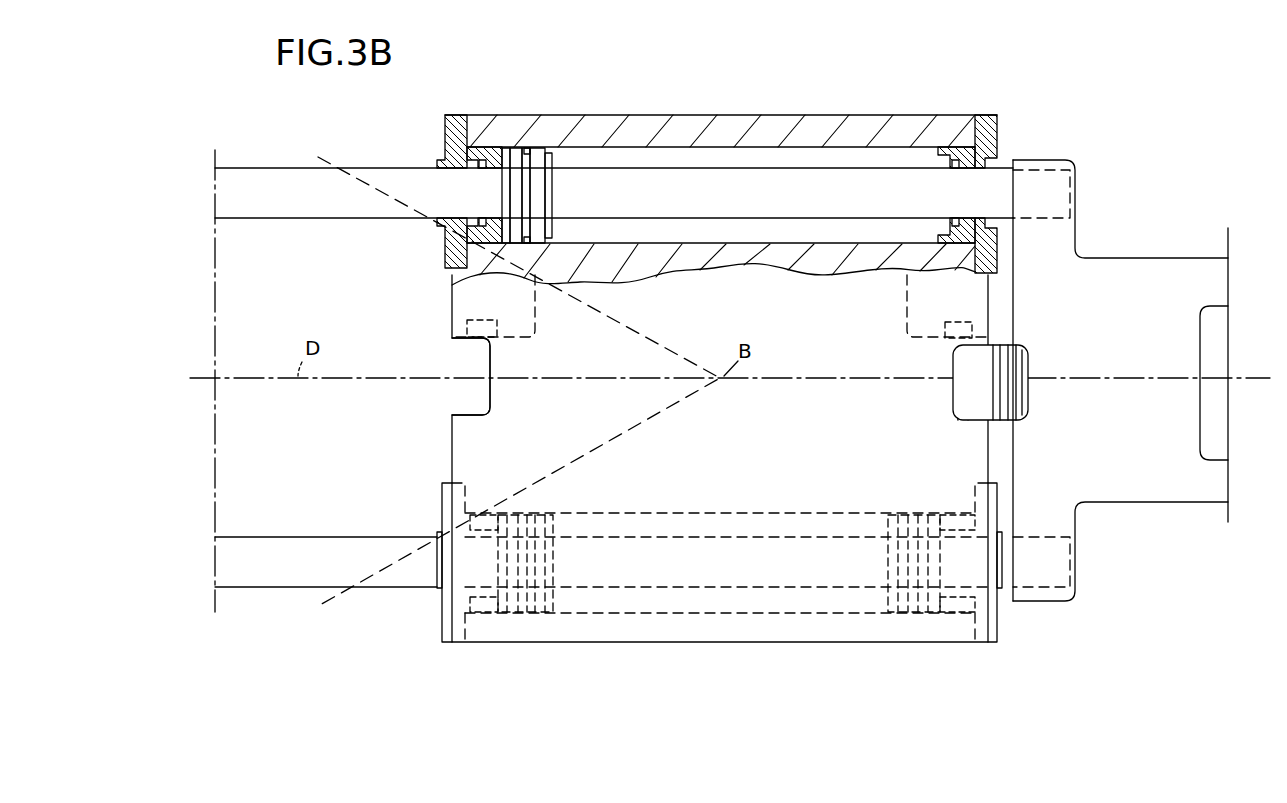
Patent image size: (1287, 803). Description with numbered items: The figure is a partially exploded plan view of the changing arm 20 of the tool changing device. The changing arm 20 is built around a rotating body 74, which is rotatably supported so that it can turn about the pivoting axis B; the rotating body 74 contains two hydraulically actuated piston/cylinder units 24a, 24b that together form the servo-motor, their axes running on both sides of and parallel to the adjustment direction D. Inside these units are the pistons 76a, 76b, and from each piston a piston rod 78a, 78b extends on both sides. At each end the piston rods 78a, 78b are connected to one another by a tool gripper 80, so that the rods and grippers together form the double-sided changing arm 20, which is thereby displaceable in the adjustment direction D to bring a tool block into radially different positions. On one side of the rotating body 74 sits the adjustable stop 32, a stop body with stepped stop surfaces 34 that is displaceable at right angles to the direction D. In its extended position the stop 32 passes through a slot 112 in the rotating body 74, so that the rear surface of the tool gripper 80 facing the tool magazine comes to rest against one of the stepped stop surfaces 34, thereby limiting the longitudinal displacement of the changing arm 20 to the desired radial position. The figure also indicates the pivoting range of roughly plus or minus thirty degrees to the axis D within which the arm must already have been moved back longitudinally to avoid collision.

The changing arm 20 is at (357, 163).
The piston/cylinder unit 24a is at (542, 142).
The piston/cylinder unit 24b is at (558, 623).
The adjustable stop 32 is at (985, 358).
The stepped stop surfaces 34 is at (1013, 400).
The rotating body 74 is at (772, 630).
The piston 76a is at (512, 255).
The piston 76b is at (548, 530).
The piston rod 78a is at (325, 205).
The piston rod 78b is at (283, 548).
The tool gripper 80 is at (1135, 277).
The slot 112 is at (467, 411).